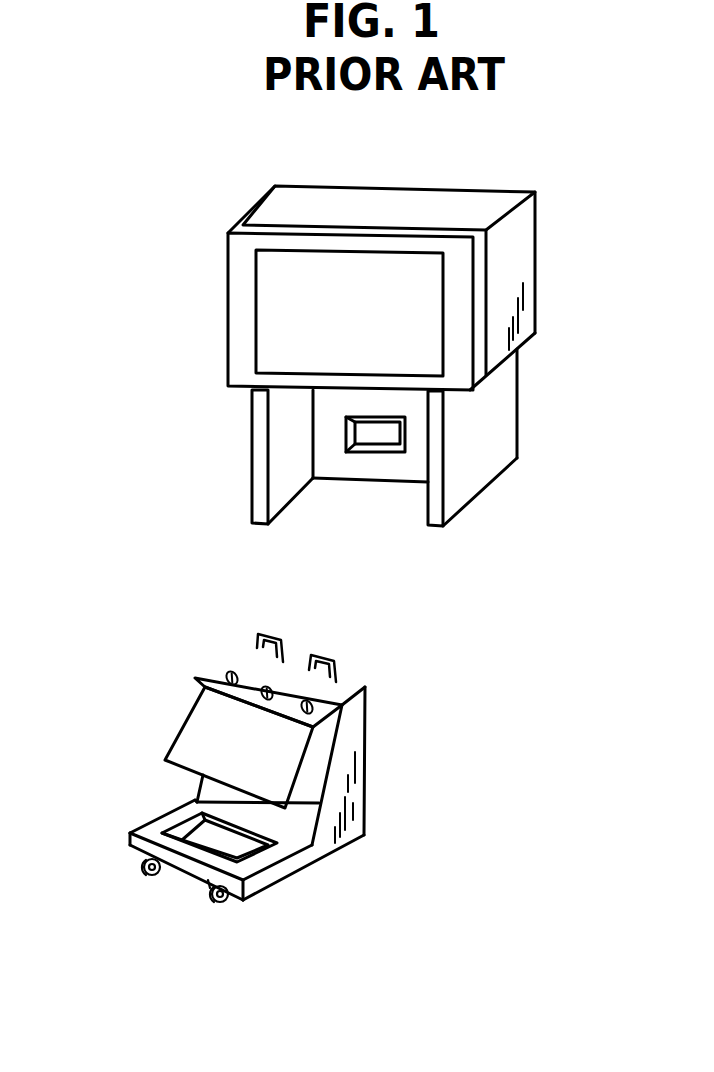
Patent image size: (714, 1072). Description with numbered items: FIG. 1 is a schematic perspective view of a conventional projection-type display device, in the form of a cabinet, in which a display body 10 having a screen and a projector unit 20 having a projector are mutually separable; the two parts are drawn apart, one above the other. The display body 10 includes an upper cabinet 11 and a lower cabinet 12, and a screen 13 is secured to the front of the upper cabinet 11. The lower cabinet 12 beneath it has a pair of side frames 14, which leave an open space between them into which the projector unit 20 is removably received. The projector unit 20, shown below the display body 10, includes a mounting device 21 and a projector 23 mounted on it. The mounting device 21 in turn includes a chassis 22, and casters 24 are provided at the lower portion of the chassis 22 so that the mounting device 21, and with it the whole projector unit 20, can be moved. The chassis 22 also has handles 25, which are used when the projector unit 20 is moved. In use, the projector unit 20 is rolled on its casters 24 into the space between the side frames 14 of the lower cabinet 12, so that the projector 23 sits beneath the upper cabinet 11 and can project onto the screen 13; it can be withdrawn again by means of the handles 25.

The display body 10 is at (365, 373).
The upper cabinet 11 is at (519, 260).
The lower cabinet 12 is at (498, 423).
The screen 13 is at (296, 320).
The side frames 14 is at (480, 472).
The projector unit 20 is at (241, 775).
The mounting device 21 is at (355, 797).
The chassis 22 is at (295, 865).
The projector 23 is at (305, 704).
The casters 24 is at (203, 895).
The handles 25 is at (338, 657).